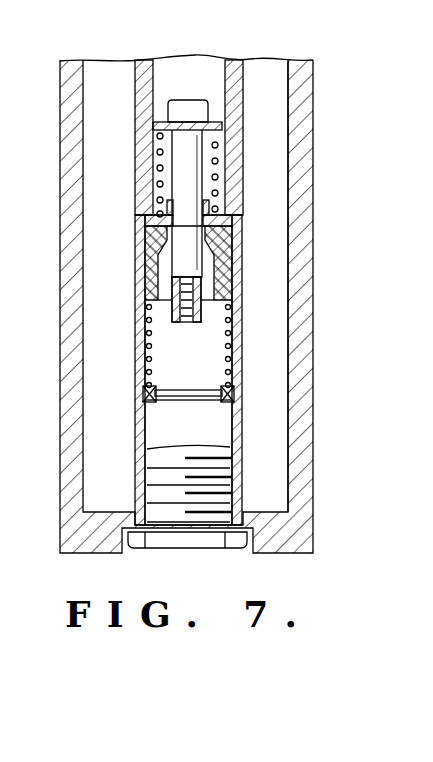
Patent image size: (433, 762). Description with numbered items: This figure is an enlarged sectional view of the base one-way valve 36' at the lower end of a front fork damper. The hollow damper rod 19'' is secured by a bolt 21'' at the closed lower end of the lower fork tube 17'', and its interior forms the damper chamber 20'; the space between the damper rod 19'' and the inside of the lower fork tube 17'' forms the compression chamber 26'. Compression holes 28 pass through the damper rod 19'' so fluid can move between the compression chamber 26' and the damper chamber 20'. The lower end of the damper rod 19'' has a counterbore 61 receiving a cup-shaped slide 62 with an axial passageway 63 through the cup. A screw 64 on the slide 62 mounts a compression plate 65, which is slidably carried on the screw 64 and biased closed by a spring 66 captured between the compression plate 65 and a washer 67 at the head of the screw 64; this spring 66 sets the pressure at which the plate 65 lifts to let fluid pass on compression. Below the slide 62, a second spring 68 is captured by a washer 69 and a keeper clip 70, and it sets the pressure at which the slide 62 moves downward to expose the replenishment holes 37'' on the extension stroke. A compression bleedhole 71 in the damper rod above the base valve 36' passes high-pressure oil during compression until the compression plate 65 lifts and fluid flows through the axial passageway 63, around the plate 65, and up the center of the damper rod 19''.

The lower fork tube 17'' is at (186, 279).
The damper chamber 20' is at (186, 30).
The damper rod 19'' is at (202, 107).
The compression chamber 26' is at (285, 264).
The base one-way valve 36' is at (128, 370).
The washer 67 is at (162, 122).
The screw 64 is at (177, 144).
The spring 66 is at (157, 152).
The compression bleedhole 71 is at (137, 216).
The compression plate 65 is at (222, 220).
The replenishment holes 37'' is at (190, 248).
The cup-shaped slide 62 is at (227, 237).
The axial passageway 63 is at (207, 247).
The counterbore 61 is at (147, 320).
The spring 68 is at (148, 342).
The washer 69 is at (145, 393).
The keeper clip 70 is at (145, 398).
The compression holes 28 is at (140, 423).
The bolt 21'' is at (188, 557).